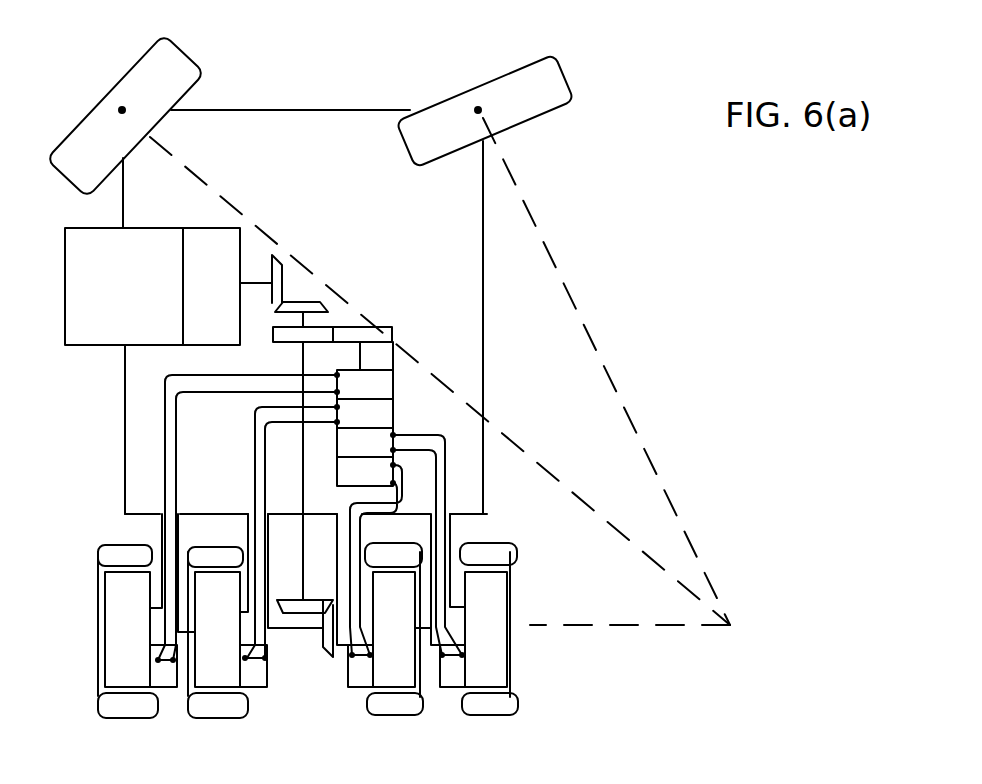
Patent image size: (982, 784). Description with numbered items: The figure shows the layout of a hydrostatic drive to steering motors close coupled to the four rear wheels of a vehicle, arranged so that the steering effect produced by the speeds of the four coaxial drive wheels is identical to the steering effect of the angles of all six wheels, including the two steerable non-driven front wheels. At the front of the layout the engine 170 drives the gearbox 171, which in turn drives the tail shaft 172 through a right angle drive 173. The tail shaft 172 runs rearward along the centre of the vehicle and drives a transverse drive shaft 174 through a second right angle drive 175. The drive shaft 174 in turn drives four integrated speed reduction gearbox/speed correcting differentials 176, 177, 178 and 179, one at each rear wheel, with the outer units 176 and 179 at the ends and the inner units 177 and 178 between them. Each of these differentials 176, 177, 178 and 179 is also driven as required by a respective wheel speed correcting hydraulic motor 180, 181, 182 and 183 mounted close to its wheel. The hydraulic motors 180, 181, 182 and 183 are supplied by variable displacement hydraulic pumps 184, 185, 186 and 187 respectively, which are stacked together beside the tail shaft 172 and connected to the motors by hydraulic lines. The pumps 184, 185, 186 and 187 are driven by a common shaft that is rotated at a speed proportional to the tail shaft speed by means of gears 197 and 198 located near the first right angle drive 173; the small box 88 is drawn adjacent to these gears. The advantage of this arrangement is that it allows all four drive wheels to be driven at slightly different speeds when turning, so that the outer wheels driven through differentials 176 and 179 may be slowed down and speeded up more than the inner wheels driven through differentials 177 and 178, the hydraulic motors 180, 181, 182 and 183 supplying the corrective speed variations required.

The engine 170 is at (130, 293).
The gearbox 171 is at (215, 293).
The right angle drive 173 is at (272, 303).
The tail shaft 172 is at (301, 443).
The gear 197 is at (281, 342).
The gear 198 is at (382, 327).
The sensor box 88 is at (376, 356).
The variable displacement hydraulic pump 187 is at (375, 396).
The variable displacement hydraulic pump 186 is at (375, 425).
The variable displacement hydraulic pump 184 is at (375, 454).
The variable displacement hydraulic pump 185 is at (375, 483).
The second right angle drive 175 is at (306, 616).
The drive shaft 174 is at (288, 630).
The integrated speed reduction gearbox/speed correcting differential 179 is at (140, 614).
The integrated speed reduction gearbox/speed correcting differential 178 is at (230, 614).
The integrated speed reduction gearbox/speed correcting differential 177 is at (407, 614).
The integrated speed reduction gearbox/speed correcting differential 176 is at (492, 616).
The wheel speed correcting hydraulic motor 183 is at (167, 688).
The wheel speed correcting hydraulic motor 182 is at (255, 688).
The wheel speed correcting hydraulic motor 181 is at (360, 688).
The wheel speed correcting hydraulic motor 180 is at (452, 688).